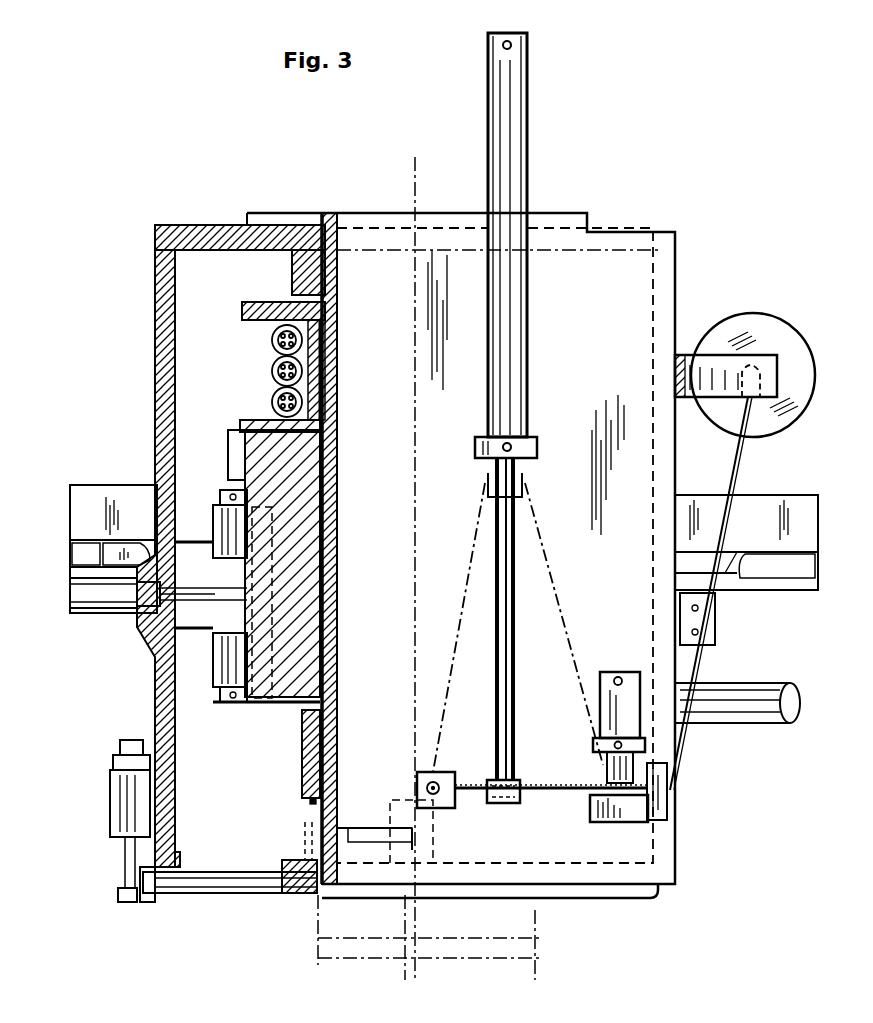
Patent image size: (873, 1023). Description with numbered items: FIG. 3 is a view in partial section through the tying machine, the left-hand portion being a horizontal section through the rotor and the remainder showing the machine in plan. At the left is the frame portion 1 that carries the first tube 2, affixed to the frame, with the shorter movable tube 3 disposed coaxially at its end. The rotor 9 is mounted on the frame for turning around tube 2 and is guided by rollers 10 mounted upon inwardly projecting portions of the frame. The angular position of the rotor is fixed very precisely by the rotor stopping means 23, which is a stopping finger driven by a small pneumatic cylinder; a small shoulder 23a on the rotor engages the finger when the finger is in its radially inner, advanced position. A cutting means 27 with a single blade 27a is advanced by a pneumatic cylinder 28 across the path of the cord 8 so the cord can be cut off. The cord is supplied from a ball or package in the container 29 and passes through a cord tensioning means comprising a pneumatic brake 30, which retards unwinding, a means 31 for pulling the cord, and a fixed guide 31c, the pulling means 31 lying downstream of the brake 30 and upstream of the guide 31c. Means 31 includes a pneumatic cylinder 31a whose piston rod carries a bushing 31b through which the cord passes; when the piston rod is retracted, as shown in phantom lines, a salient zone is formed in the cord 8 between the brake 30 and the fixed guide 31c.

The housing 1 is at (178, 268).
The first tube 2 is at (340, 327).
The movable tube 3 is at (316, 895).
The cord 8 is at (560, 792).
The rotor 9 is at (252, 420).
The rollers 10 is at (216, 700).
The rotor stopping means 23 is at (137, 630).
The shoulder 23a is at (322, 573).
The cutting means 27 is at (150, 903).
The blade 27a is at (292, 860).
The pneumatic cylinder 28 is at (110, 778).
The container 29 is at (731, 330).
The pneumatic brake 30 is at (605, 775).
The means for pulling the cord 31 is at (515, 648).
The pneumatic cylinder 31a is at (528, 181).
The bushing 31b is at (497, 808).
The fixed guide 31c is at (417, 775).